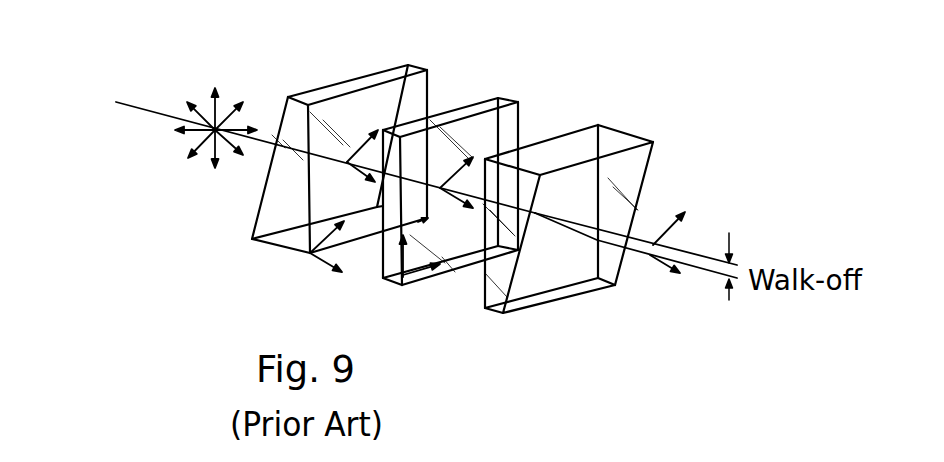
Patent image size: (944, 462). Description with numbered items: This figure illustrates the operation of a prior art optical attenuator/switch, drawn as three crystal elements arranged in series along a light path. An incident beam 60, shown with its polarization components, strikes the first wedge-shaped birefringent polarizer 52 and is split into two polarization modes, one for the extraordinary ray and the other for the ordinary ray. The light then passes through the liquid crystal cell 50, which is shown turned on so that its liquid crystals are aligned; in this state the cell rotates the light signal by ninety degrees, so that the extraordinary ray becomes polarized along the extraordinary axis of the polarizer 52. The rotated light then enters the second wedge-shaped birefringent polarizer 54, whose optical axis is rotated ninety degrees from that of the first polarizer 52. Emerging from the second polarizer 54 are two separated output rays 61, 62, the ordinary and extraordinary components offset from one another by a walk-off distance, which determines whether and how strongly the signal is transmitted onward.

The liquid crystal cell 50 is at (488, 100).
The first wedge-shaped birefringent polarizer 52 is at (272, 245).
The second wedge-shaped birefringent polarizer 54 is at (640, 172).
The incident beam 60 is at (143, 110).
The ordinary output beam 61 is at (688, 252).
The extraordinary output beam 62 is at (700, 270).